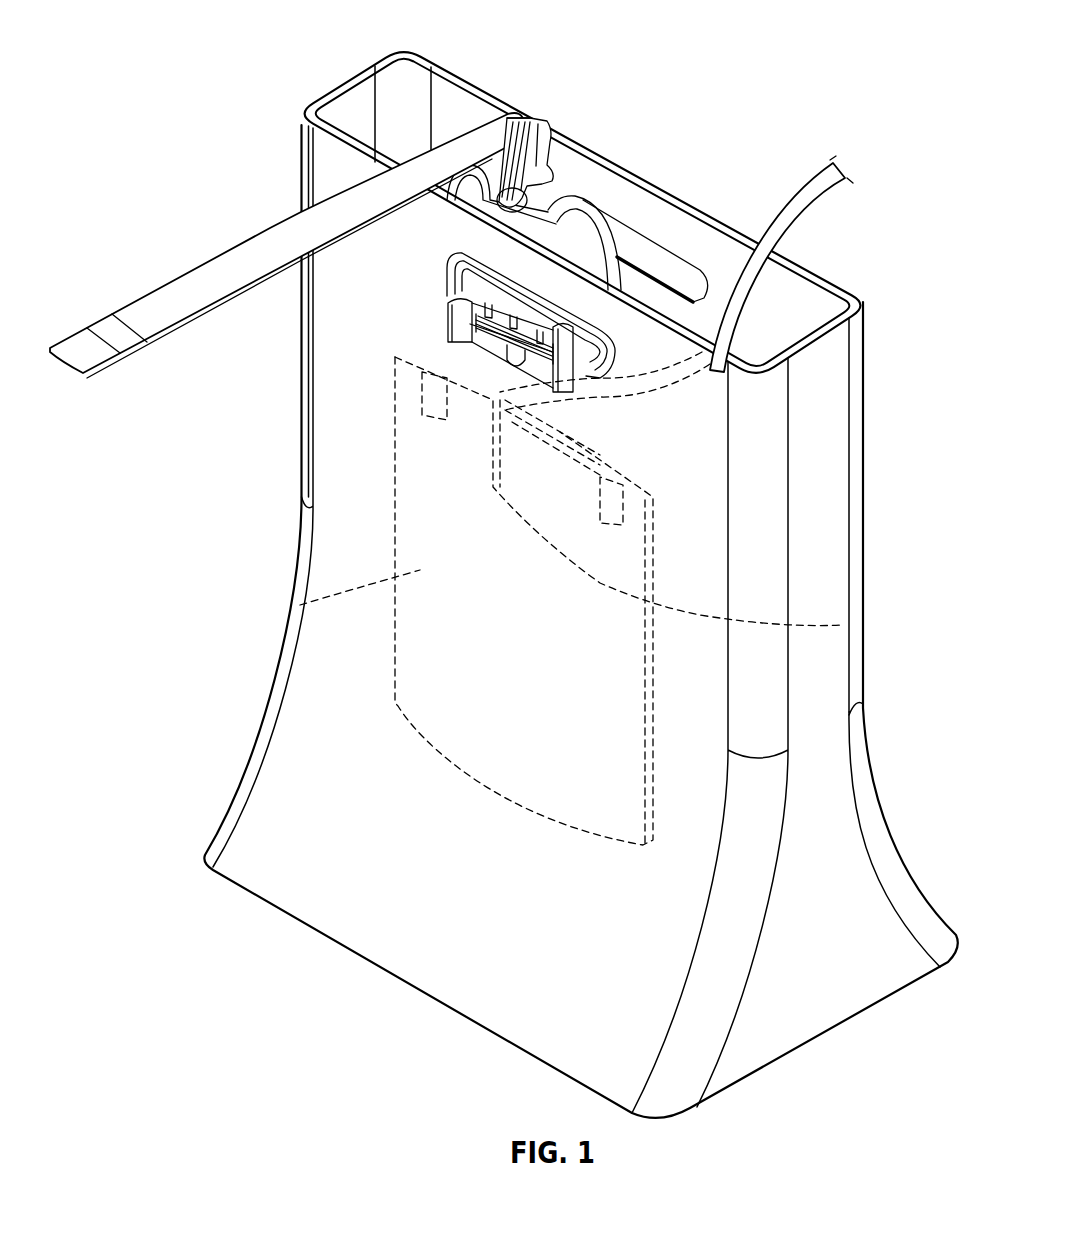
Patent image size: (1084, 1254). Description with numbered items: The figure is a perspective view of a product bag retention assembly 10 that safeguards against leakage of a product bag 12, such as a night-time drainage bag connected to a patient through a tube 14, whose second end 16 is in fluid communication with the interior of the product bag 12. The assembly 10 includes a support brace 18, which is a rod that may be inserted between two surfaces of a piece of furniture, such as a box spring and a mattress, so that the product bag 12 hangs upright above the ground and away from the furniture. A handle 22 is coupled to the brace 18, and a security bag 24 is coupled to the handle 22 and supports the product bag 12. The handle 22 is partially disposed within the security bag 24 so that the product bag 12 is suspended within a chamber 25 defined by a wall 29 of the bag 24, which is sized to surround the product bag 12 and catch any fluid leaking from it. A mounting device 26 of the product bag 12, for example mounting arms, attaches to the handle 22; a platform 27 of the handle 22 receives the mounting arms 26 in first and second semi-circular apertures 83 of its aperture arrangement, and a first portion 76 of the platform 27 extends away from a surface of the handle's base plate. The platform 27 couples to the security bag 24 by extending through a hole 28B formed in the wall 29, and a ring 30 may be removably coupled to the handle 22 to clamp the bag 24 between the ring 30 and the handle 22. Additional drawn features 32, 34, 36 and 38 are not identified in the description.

The product bag retention assembly 10 is at (210, 98).
The product bag 12 is at (313, 600).
The tube 14 is at (782, 208).
The second end of the tube 16 is at (843, 625).
The support brace 18 is at (175, 292).
The handle 22 is at (583, 215).
The security bag 24 is at (837, 447).
The chamber 25 is at (808, 312).
The mounting device 26 is at (450, 323).
The platform 27 is at (518, 305).
The hole 28B is at (698, 262).
The wall 29 is at (713, 487).
The ring 30 is at (445, 256).
The strap tip 32 is at (76, 346).
The strap attachment end 34 is at (510, 114).
The clamp 36 is at (540, 124).
The strap top surface 38 is at (270, 242).
The first portion of the platform 76 is at (443, 293).
The first and second semi-circular apertures 83 is at (585, 345).